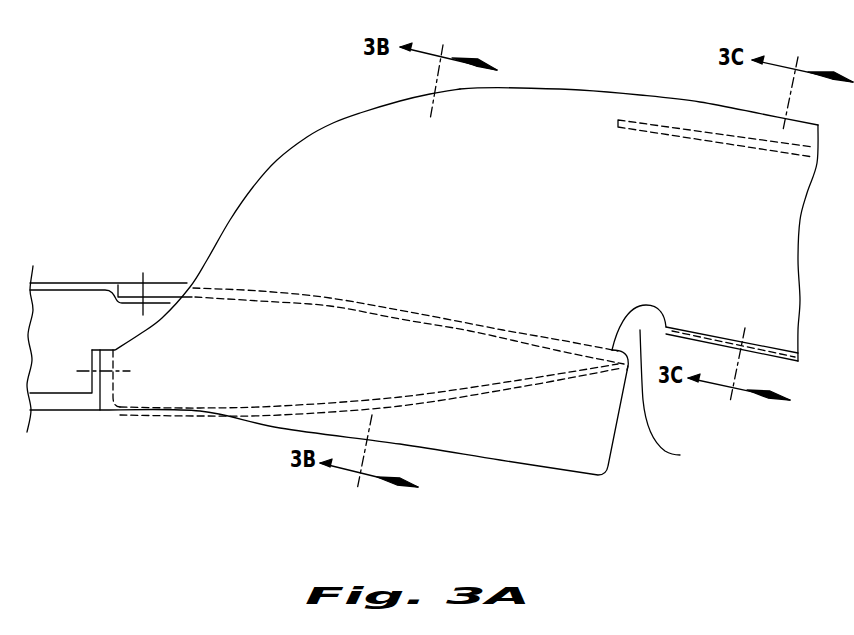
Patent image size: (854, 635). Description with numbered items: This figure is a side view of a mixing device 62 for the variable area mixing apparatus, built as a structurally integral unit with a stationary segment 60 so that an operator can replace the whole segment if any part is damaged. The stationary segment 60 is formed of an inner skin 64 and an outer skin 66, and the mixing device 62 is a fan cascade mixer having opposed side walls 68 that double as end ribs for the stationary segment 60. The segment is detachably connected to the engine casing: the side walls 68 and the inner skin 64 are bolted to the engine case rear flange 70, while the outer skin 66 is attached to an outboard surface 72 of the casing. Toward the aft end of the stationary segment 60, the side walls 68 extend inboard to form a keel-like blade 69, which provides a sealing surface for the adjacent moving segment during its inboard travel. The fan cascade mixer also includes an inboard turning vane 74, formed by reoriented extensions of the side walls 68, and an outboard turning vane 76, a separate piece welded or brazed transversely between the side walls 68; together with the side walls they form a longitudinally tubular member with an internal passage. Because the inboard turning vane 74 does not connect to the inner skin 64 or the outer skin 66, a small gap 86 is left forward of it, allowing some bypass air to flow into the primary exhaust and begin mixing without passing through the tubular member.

The stationary segment 60 is at (160, 287).
The mixing device 62 is at (602, 92).
The inner skin 64 is at (185, 415).
The outer skin 66 is at (343, 297).
The side wall 68 is at (352, 155).
The keel-like blade 69 is at (565, 455).
The engine case rear flange 70 is at (78, 412).
The outboard surface 72 is at (79, 283).
The inboard turning vane 74 is at (700, 330).
The outboard turning vane 76 is at (705, 135).
The gap 86 is at (659, 386).